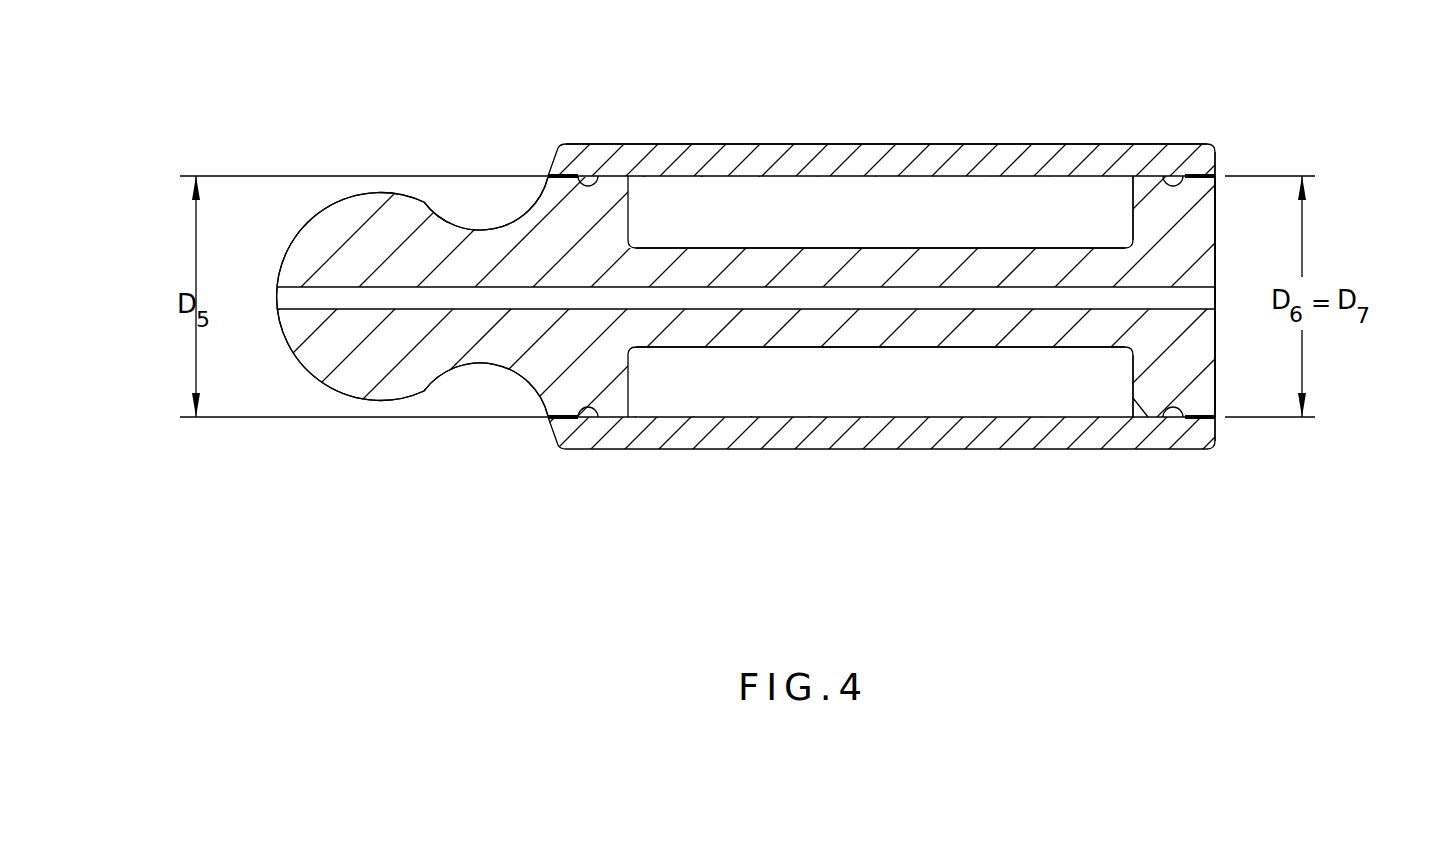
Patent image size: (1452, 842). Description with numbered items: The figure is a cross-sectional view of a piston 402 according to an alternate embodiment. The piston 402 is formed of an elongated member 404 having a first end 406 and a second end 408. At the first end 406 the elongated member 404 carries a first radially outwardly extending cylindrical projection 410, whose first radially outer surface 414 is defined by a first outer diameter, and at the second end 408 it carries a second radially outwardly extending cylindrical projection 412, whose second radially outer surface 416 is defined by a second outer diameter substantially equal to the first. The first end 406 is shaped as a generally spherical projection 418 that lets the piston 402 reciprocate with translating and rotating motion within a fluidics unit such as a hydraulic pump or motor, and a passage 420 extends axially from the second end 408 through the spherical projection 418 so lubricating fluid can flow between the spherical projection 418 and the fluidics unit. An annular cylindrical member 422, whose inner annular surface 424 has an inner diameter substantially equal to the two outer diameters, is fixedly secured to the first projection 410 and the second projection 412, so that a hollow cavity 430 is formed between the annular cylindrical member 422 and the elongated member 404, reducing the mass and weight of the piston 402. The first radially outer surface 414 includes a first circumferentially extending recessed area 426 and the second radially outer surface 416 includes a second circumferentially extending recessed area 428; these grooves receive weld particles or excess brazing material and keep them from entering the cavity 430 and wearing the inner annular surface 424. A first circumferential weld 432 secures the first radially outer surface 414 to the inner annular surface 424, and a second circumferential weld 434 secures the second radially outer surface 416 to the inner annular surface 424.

The piston 402 is at (528, 449).
The elongated member 404 is at (963, 248).
The first end 406 is at (469, 141).
The second end 408 is at (1337, 198).
The first radially outwardly extending cylindrical projection 410 is at (540, 397).
The second radially outwardly extending cylindrical projection 412 is at (1215, 392).
The first radially outer surface 414 is at (617, 176).
The second radially outer surface 416 is at (1153, 177).
The spherical projection 418 is at (333, 212).
The passage 420 is at (278, 289).
The annular cylindrical member 422 is at (1077, 143).
The inner annular surface 424 is at (827, 195).
The first circumferentially extending recessed area 426 is at (588, 410).
The second circumferentially extending recessed area 428 is at (1175, 410).
The hollow cavity 430 is at (822, 393).
The first circumferential weld 432 is at (549, 178).
The second circumferential weld 434 is at (1197, 420).